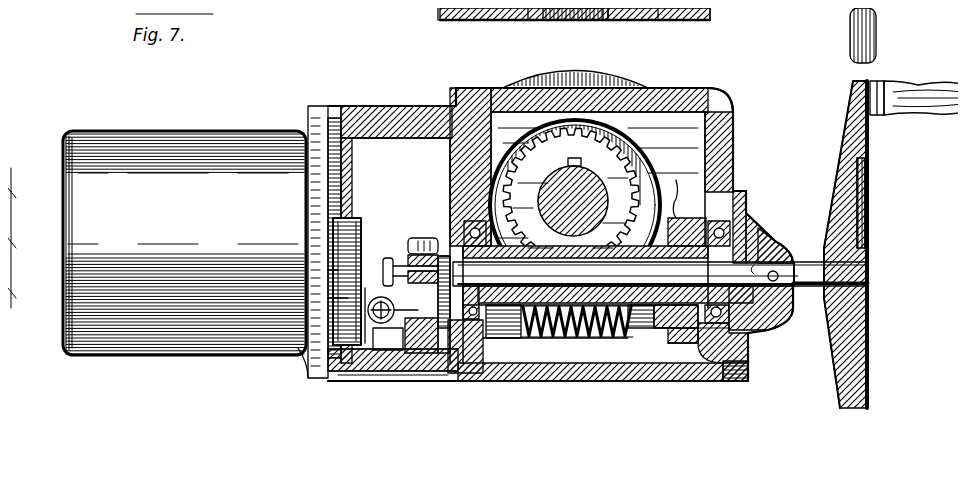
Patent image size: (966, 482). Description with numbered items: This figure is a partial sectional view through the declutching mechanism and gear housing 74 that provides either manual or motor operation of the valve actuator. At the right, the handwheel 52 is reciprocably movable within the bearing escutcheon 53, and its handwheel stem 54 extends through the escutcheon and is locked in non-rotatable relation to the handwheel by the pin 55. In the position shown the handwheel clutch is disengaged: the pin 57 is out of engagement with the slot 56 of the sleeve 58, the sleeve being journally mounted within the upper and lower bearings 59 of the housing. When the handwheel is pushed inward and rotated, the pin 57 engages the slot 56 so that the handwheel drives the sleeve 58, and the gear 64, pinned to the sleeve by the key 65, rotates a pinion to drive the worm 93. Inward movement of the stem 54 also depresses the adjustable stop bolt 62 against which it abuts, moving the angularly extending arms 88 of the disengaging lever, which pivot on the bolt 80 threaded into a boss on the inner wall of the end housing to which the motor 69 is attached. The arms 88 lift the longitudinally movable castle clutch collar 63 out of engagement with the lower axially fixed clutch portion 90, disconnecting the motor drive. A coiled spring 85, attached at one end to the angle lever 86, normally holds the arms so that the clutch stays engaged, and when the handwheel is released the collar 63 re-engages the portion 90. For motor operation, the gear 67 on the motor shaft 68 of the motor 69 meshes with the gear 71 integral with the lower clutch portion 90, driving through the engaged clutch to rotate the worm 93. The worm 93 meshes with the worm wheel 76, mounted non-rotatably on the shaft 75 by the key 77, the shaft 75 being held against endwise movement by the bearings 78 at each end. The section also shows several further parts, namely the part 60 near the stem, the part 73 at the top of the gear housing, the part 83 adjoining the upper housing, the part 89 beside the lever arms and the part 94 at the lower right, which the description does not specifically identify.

The handwheel 52 is at (860, 196).
The bearing escutcheon 53 is at (752, 222).
The handwheel stem 54 is at (776, 310).
The pin 55 is at (868, 282).
The slot 56 is at (800, 222).
The pin 57 is at (764, 310).
The sleeve 58 is at (632, 330).
The bearings 59 is at (452, 215).
The pin 60 is at (792, 252).
The adjustable stop bolt 62 is at (438, 248).
The castle clutch collar 63 is at (320, 272).
The gear 64 is at (668, 172).
The key 65 is at (716, 200).
The gear 67 is at (302, 192).
The motor shaft 68 is at (320, 222).
The motor 69 is at (160, 122).
The gear 71 is at (320, 290).
The cover 73 is at (470, 10).
The gear housing 74 is at (724, 134).
The shaft 75 is at (628, 160).
The worm wheel 76 is at (608, 132).
The key 77 is at (560, 150).
The bearings 78 is at (655, 8).
The bolt 80 is at (413, 230).
The bracket 83 is at (610, 8).
The coiled spring 85 is at (285, 345).
The angle lever 86 is at (386, 326).
The arms of disengaging lever 88 is at (378, 252).
The shaft 89 is at (395, 252).
The lower clutch portion 90 is at (320, 262).
The worm 93 is at (495, 332).
The bushing 94 is at (742, 364).